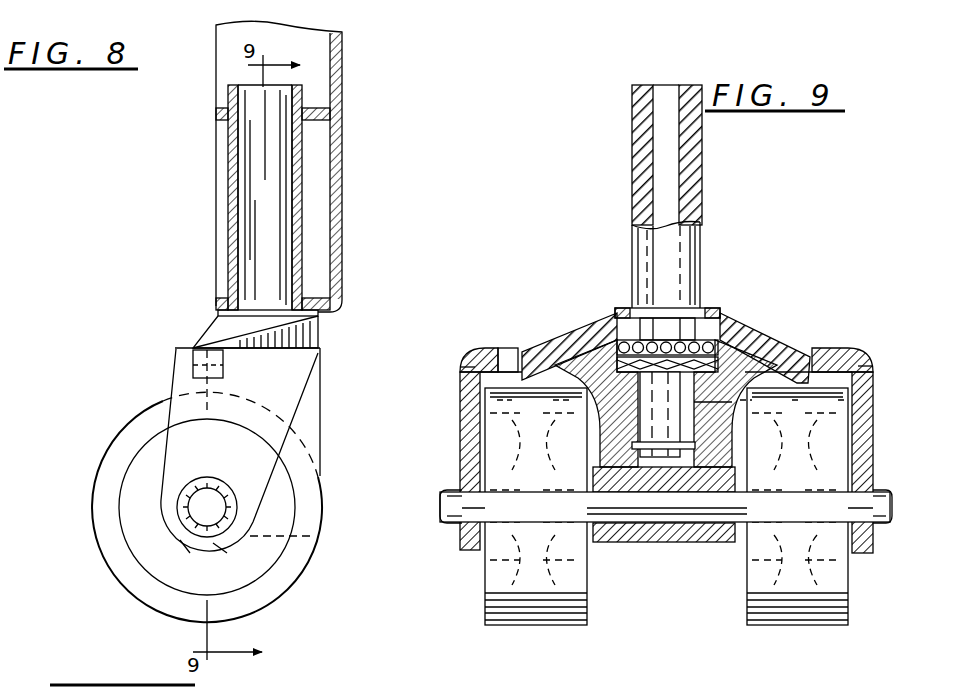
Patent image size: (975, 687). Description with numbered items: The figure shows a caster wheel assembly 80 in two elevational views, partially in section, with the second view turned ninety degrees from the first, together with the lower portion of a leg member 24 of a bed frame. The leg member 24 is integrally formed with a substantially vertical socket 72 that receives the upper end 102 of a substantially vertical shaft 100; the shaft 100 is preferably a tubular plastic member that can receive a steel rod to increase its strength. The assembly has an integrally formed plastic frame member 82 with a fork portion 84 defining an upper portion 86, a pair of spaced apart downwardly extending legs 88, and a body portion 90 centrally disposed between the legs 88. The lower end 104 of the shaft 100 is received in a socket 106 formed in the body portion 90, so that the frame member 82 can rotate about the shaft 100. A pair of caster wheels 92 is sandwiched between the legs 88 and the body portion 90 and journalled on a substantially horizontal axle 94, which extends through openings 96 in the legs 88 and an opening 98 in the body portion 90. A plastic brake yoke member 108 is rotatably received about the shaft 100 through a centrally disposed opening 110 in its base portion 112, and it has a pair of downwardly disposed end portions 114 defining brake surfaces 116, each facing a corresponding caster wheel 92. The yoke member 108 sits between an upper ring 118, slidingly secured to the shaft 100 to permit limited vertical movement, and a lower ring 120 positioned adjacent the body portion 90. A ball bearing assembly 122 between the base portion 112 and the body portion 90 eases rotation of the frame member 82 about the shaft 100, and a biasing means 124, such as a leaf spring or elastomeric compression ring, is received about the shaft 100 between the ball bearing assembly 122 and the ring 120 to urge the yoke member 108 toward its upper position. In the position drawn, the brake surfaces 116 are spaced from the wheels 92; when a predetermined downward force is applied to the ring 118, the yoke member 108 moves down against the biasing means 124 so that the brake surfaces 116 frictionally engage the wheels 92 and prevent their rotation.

In FIG. 8, the leg member 24 is at (350, 56).
In FIG. 8, the socket 72 is at (248, 200).
In FIG. 8, the caster wheel assembly 80 is at (190, 345).
In FIG. 9, the caster wheel assembly 80 is at (811, 341).
In FIG. 9, the frame member 82 is at (852, 345).
In FIG. 9, the fork portion 84 is at (478, 352).
In FIG. 9, the upper portion 86 is at (507, 360).
In FIG. 8, the legs 88 is at (268, 437).
In FIG. 9, the legs 88 is at (462, 440).
In FIG. 9, the body portion 90 is at (650, 480).
In FIG. 8, the caster wheels 92 is at (300, 547).
In FIG. 9, the caster wheels 92 is at (535, 605).
In FIG. 9, the axle 94 is at (698, 510).
In FIG. 9, the openings 96 is at (450, 510).
In FIG. 9, the opening 98 is at (620, 505).
In FIG. 8, the shaft 100 is at (277, 242).
In FIG. 9, the shaft 100 is at (690, 248).
In FIG. 8, the upper end 102 is at (277, 112).
In FIG. 9, the upper end 102 is at (690, 143).
In FIG. 9, the lower end 104 is at (720, 440).
In FIG. 9, the socket 106 is at (640, 420).
In FIG. 8, the brake yoke member 108 is at (257, 331).
In FIG. 9, the brake yoke member 108 is at (668, 334).
In FIG. 9, the opening 110 is at (682, 325).
In FIG. 9, the base portion 112 is at (593, 337).
In FIG. 8, the end portions 114 is at (193, 365).
In FIG. 9, the end portions 114 is at (462, 368).
In FIG. 8, the brake surfaces 116 is at (223, 378).
In FIG. 9, the brake surfaces 116 is at (671, 402).
In FIG. 8, the upper ring 118 is at (293, 312).
In FIG. 9, the upper ring 118 is at (650, 315).
In FIG. 9, the lower ring 120 is at (732, 402).
In FIG. 9, the ball bearing assembly 122 is at (705, 345).
In FIG. 9, the biasing means 124 is at (725, 358).